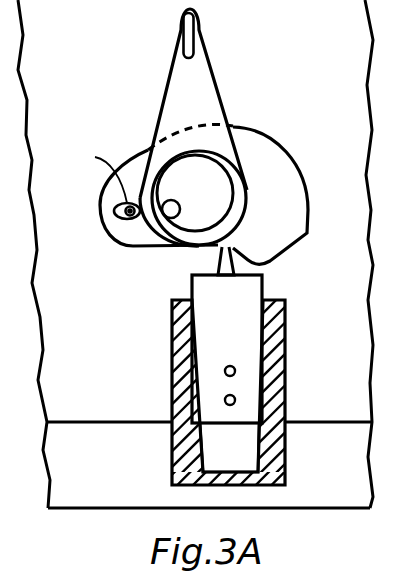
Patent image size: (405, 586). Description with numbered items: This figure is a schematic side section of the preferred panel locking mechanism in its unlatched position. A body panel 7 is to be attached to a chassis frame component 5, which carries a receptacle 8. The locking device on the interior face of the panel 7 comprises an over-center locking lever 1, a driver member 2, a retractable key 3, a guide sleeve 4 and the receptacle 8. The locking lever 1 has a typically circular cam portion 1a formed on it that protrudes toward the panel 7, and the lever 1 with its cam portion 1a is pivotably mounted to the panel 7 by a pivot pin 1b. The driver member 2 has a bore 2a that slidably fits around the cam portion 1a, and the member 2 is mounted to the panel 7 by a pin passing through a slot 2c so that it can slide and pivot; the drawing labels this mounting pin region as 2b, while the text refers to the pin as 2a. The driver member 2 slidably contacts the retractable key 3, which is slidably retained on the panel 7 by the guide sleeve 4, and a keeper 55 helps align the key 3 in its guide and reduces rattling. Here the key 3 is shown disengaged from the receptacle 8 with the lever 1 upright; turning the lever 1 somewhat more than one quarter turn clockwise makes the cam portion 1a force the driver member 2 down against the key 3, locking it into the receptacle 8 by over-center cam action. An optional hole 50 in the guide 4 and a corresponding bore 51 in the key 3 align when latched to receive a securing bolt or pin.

The locking lever 1 is at (193, 95).
The cam portion 1a is at (230, 164).
The pivot pin 1b is at (171, 200).
The driver member 2 is at (290, 222).
The bore 2a is at (210, 157).
The holder slot 2b is at (92, 170).
The slot 2c is at (100, 202).
The retractable key 3 is at (248, 295).
The guide sleeve 4 is at (286, 363).
The frame component 5 is at (118, 476).
The panel 7 is at (343, 43).
The receptacle 8 is at (250, 450).
The hole 50 is at (224, 402).
The bore 51 is at (224, 371).
The keeper 55 is at (213, 257).